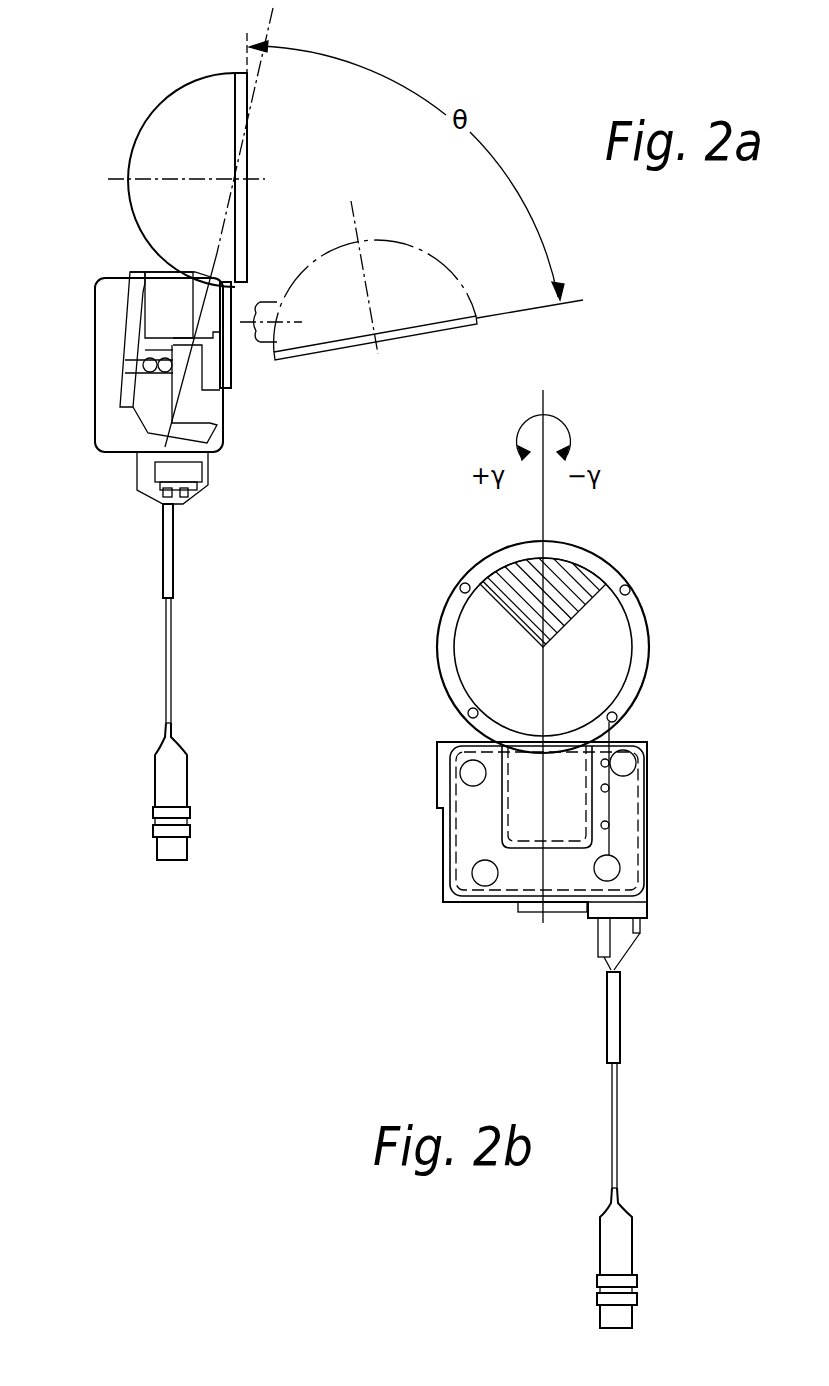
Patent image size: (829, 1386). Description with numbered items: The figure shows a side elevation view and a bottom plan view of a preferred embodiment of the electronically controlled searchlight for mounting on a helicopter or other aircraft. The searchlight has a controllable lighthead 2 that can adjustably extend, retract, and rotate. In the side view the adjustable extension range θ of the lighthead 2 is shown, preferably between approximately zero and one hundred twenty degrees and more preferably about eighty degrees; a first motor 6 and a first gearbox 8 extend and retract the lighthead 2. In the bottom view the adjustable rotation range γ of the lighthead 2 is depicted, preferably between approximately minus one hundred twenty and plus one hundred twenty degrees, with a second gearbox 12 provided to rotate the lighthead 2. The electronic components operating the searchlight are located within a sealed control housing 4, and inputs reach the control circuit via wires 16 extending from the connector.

In FIG. 2a, the lighthead 2 is at (169, 97).
In FIG. 2b, the lighthead 2 is at (617, 565).
In FIG. 2a, the control housing 4 is at (113, 428).
In FIG. 2a, the first motor 6 is at (212, 413).
In FIG. 2a, the first gearbox 8 is at (117, 305).
In FIG. 2a, the second gearbox 12 is at (153, 408).
In FIG. 2b, the wires 16 is at (618, 1143).